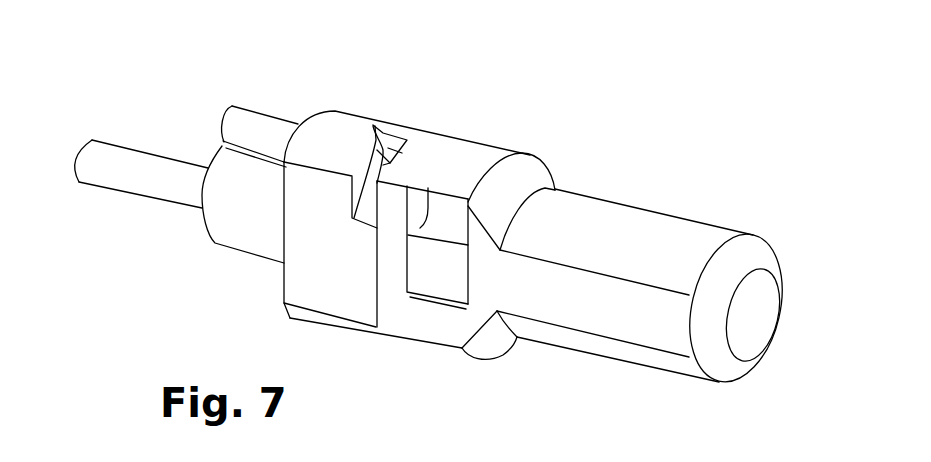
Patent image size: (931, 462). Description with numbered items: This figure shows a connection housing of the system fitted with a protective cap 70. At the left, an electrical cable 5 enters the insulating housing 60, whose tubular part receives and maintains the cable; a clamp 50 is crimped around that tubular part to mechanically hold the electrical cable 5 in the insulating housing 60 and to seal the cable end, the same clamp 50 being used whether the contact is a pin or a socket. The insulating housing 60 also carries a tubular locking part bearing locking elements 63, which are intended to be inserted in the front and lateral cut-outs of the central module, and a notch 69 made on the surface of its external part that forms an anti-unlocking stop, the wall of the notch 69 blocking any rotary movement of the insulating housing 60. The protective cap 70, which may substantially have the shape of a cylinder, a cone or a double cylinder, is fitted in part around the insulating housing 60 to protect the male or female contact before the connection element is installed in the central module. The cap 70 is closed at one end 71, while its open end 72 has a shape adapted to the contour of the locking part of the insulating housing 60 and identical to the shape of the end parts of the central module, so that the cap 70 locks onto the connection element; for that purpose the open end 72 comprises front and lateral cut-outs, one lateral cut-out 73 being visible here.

The electrical cable 5 is at (113, 162).
The clamp 50 is at (255, 127).
The insulating housing 60 is at (343, 132).
The locking element 63 is at (440, 265).
The notch 69 is at (375, 125).
The protective cap 70 is at (673, 181).
The closed end 71 is at (757, 323).
The open end 72 is at (387, 172).
The lateral cut-out 73 is at (417, 209).